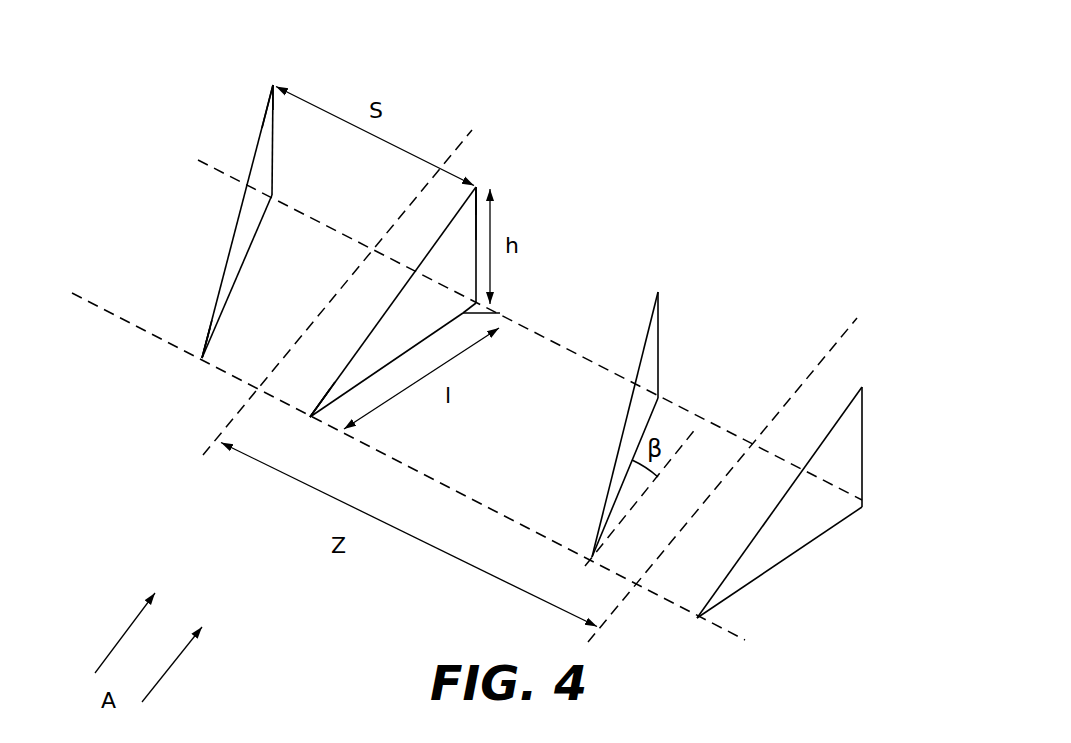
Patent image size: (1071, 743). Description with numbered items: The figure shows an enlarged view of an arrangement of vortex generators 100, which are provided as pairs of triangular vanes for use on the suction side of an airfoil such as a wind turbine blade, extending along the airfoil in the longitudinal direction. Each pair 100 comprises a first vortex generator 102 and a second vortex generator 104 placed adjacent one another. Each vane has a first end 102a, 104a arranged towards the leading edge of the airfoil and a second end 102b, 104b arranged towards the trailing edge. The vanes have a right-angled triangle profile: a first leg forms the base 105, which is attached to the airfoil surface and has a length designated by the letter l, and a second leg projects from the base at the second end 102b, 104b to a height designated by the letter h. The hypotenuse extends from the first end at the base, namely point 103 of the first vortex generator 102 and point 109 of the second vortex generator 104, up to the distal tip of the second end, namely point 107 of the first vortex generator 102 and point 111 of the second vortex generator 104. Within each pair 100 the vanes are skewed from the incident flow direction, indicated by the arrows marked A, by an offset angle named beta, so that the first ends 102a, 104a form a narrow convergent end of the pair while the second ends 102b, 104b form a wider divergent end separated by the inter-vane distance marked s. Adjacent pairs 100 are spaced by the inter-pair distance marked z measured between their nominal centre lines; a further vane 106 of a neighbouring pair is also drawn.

The vortex generator pair 100 is at (343, 80).
The first vortex generator 102 is at (232, 237).
The first end of first vortex generator 102a is at (187, 332).
The second end of first vortex generator 102b is at (232, 150).
The base point of first vortex generator 103 is at (205, 355).
The second vortex generator 104 is at (422, 327).
The first end of second vortex generator 104a is at (280, 413).
The second end of second vortex generator 104b is at (532, 227).
The base 105 is at (500, 313).
The third prism 106 is at (660, 290).
The tip of first vortex generator 107 is at (273, 85).
The base point of second vortex generator 109 is at (310, 413).
The tip of second vortex generator 111 is at (478, 186).